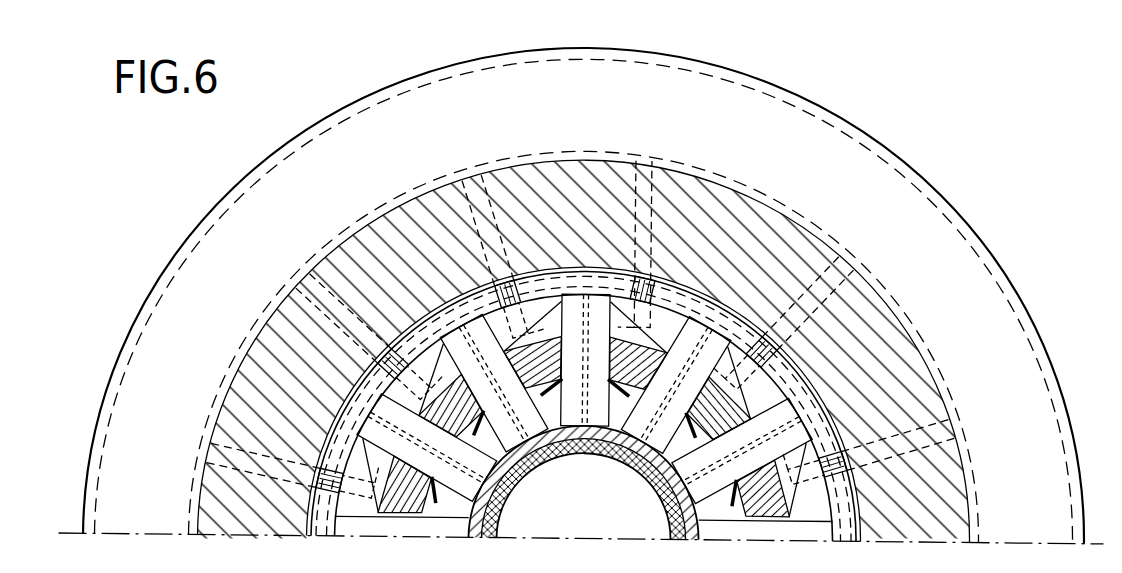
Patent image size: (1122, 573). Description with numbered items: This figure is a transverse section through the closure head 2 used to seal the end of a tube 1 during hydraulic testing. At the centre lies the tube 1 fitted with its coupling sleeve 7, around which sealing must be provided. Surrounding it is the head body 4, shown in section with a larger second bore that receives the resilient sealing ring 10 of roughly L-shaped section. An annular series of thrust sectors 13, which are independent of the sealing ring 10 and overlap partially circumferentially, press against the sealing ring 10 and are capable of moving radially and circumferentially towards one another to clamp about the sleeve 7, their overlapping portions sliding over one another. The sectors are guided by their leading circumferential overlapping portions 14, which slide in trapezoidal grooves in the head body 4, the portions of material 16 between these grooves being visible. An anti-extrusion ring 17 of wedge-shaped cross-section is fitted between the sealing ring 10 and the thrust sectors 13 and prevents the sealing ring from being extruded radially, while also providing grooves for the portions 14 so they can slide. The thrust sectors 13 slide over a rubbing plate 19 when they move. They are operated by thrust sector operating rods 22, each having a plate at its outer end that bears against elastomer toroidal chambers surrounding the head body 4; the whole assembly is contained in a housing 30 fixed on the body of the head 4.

The closure head 2 is at (581, 308).
The housing 30 is at (925, 182).
The head body 4 is at (487, 190).
The rubbing plate 19 is at (738, 325).
The thrust sectors 13 is at (617, 294).
The leading circumferential overlapping portions 14 is at (578, 306).
The anti-extrusion ring 17 is at (658, 339).
The portions of material 16 is at (496, 290).
The thrust sector operating rods 22 is at (648, 341).
The resilient sealing ring 10 is at (608, 426).
The tube 1 is at (660, 490).
The coupling sleeve 7 is at (688, 538).